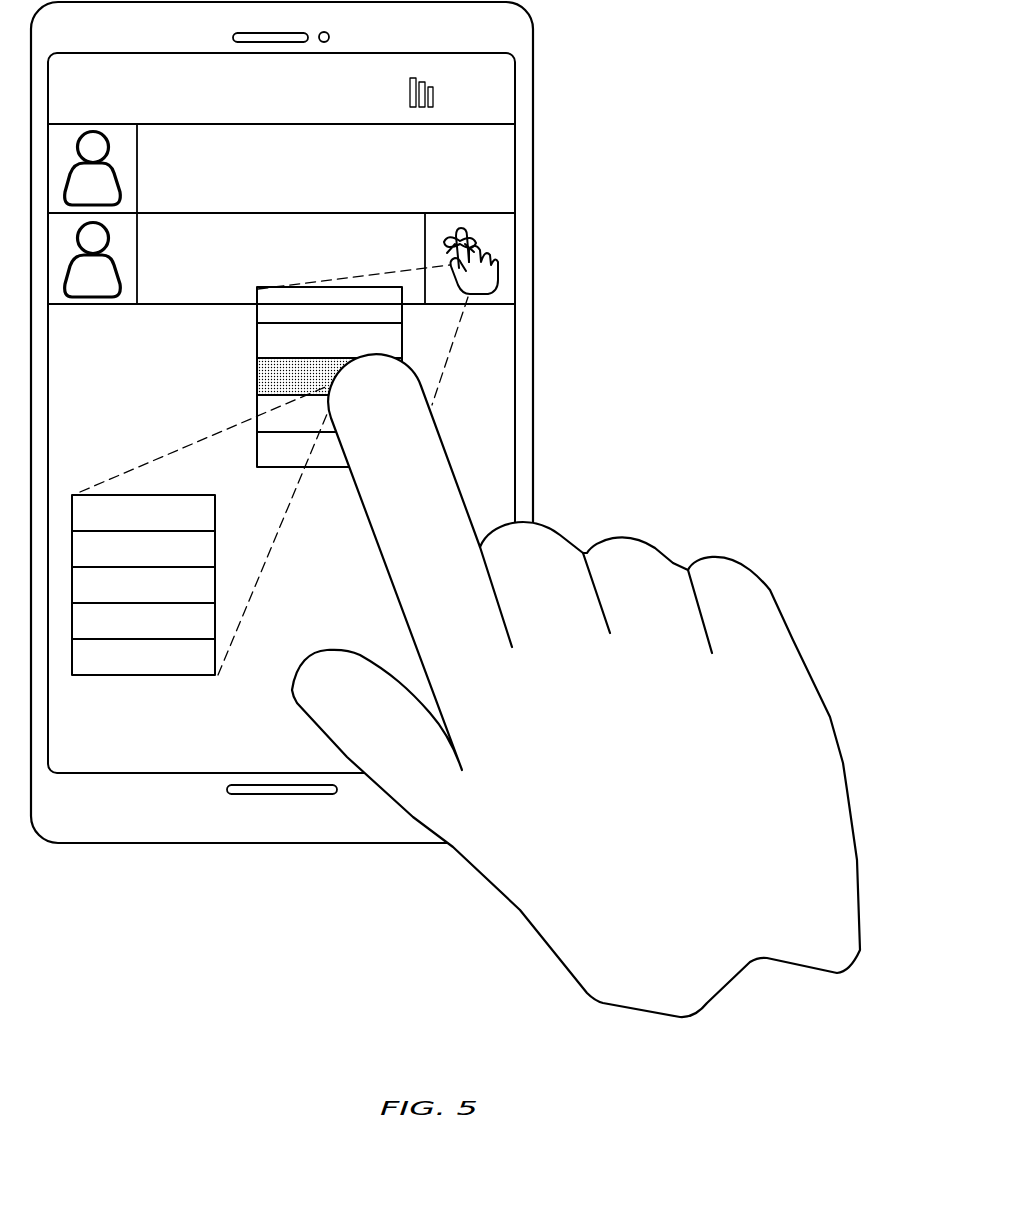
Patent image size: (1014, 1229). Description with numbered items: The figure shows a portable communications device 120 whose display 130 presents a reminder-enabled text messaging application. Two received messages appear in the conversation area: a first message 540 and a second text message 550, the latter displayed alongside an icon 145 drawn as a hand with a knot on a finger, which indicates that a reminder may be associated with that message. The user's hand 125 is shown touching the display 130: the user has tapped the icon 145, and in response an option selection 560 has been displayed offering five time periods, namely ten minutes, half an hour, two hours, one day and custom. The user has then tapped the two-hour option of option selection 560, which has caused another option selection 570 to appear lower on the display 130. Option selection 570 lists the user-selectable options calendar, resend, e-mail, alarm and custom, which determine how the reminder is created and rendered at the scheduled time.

The device 120 is at (407, 823).
The user's hand 125 is at (787, 965).
The display 130 is at (281, 413).
The icon 145 is at (503, 243).
The message 540 is at (487, 162).
The text message 550 is at (370, 242).
The option selection 560 is at (402, 340).
The option selection 570 is at (137, 677).